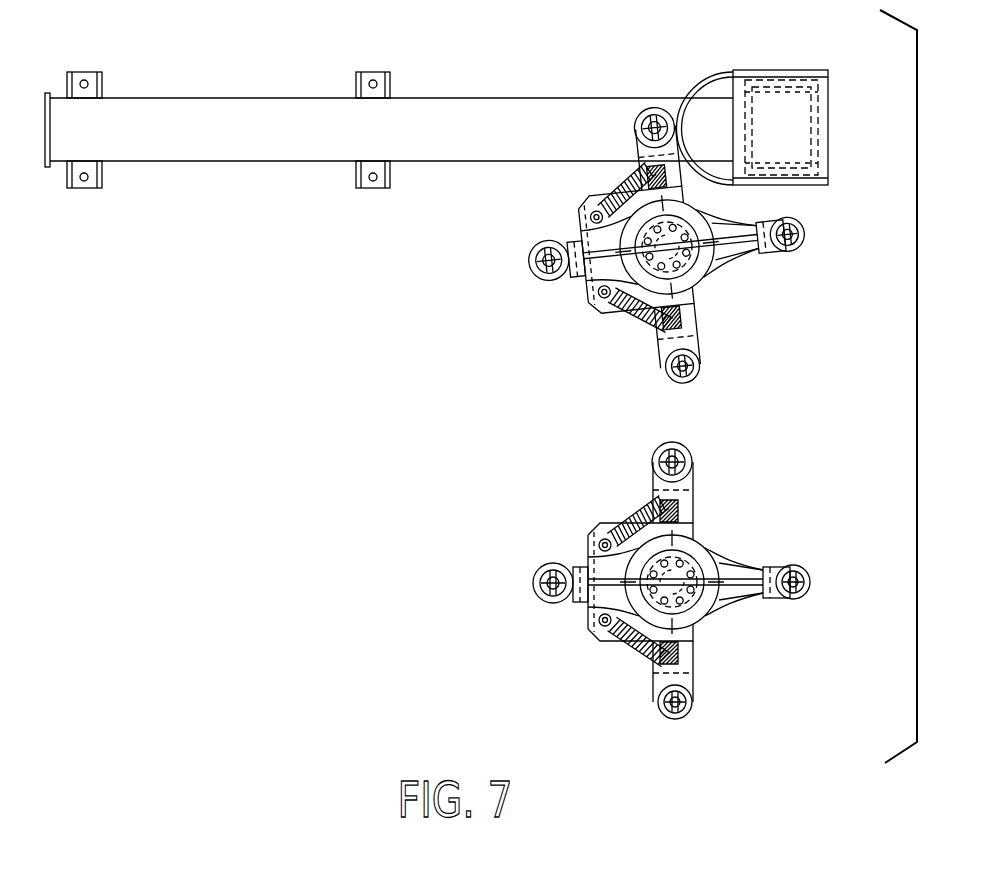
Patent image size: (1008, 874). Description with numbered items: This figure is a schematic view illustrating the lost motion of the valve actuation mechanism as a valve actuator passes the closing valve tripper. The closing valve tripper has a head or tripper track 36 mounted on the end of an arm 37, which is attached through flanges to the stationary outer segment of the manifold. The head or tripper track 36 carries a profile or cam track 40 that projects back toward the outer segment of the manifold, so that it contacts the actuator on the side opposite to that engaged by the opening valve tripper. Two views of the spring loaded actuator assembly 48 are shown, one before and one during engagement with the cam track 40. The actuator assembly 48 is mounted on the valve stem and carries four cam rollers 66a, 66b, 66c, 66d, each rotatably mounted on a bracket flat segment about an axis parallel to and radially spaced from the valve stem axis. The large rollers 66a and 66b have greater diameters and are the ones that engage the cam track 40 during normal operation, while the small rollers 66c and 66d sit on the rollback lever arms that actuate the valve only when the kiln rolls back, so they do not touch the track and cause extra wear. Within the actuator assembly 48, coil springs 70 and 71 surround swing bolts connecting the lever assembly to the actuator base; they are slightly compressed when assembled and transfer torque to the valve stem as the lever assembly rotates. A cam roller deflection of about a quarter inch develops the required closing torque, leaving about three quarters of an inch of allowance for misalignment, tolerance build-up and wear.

The head or tripper track 36 is at (828, 127).
The arm 37 is at (257, 138).
The profile or cam track 40 is at (702, 75).
The spring loaded actuator assembly 48 is at (595, 307).
The cam roller 66a is at (717, 436).
The cam roller 66b is at (835, 559).
The cam roller 66c is at (724, 717).
The cam roller 66d is at (510, 601).
The coil spring 70 is at (605, 508).
The coil spring 71 is at (622, 655).